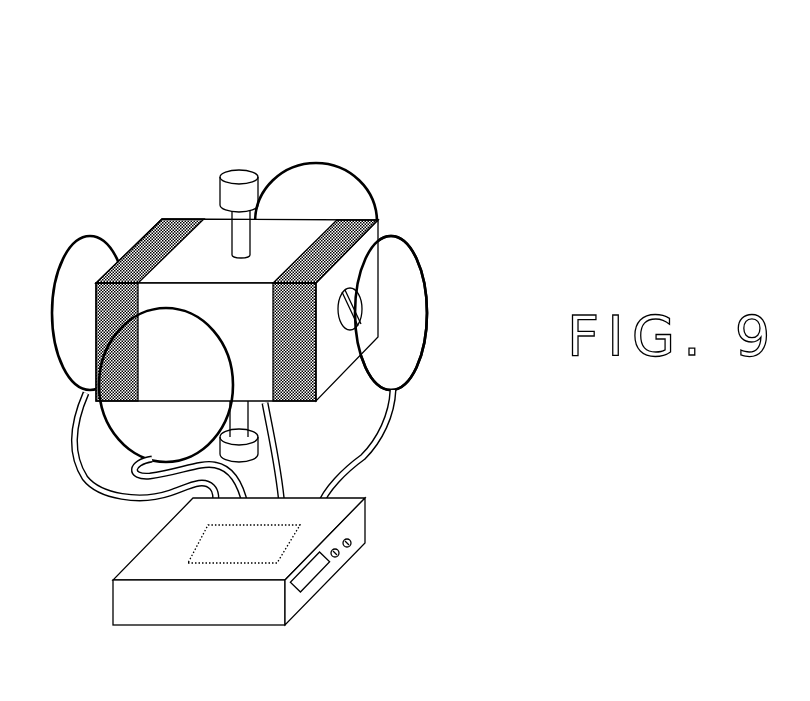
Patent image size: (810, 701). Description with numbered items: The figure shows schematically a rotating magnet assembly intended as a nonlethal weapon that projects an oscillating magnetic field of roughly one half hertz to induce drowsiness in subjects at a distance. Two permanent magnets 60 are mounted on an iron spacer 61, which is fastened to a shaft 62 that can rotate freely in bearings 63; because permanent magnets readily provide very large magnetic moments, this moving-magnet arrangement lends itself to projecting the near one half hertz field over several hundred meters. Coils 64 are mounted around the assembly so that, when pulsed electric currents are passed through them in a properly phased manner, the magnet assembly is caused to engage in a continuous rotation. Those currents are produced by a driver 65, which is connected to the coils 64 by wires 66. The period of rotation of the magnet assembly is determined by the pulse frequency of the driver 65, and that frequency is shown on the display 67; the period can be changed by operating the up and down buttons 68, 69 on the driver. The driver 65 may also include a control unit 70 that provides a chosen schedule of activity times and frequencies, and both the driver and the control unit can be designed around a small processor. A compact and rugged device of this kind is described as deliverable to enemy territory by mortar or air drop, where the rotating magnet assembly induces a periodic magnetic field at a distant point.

The permanent magnets 60 is at (187, 215).
The iron spacer 61 is at (308, 165).
The shaft 62 is at (220, 232).
The bearings 63 is at (255, 162).
The coils 64 is at (275, 277).
The driver 65 is at (294, 548).
The wires 66 is at (62, 432).
The display 67 is at (313, 593).
The up button 68 is at (347, 557).
The down button 69 is at (363, 530).
The control unit 70 is at (192, 535).